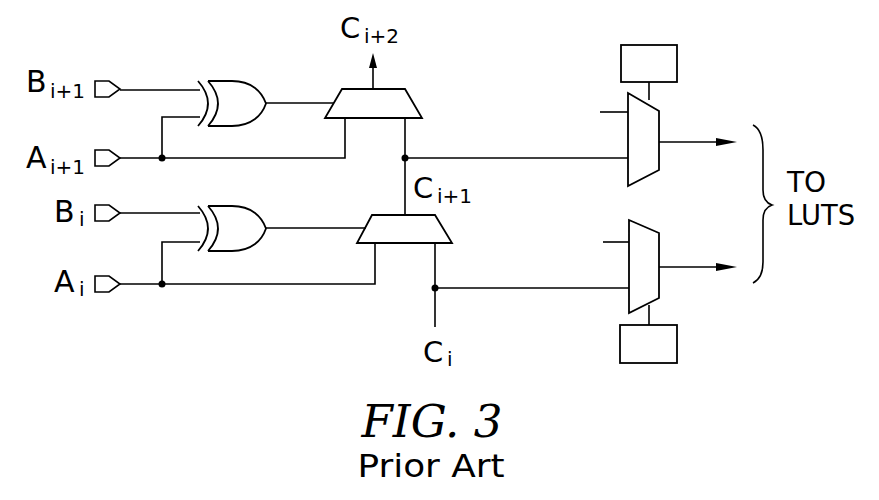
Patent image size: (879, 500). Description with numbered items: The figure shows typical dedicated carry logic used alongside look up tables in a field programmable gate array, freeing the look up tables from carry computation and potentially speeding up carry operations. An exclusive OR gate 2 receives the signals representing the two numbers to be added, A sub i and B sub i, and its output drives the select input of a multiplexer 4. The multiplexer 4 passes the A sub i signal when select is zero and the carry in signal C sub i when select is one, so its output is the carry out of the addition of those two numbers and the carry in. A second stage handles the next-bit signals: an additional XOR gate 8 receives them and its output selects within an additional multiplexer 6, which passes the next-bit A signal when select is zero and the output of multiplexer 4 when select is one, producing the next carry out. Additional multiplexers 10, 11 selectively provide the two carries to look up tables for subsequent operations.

The additional XOR gate 8 is at (230, 81).
The exclusive OR (XOR) gate 2 is at (238, 206).
The additional multiplexer 6 is at (412, 102).
The multiplexer 4 is at (448, 238).
The additional multiplexer 11 is at (661, 115).
The additional multiplexer 10 is at (658, 232).